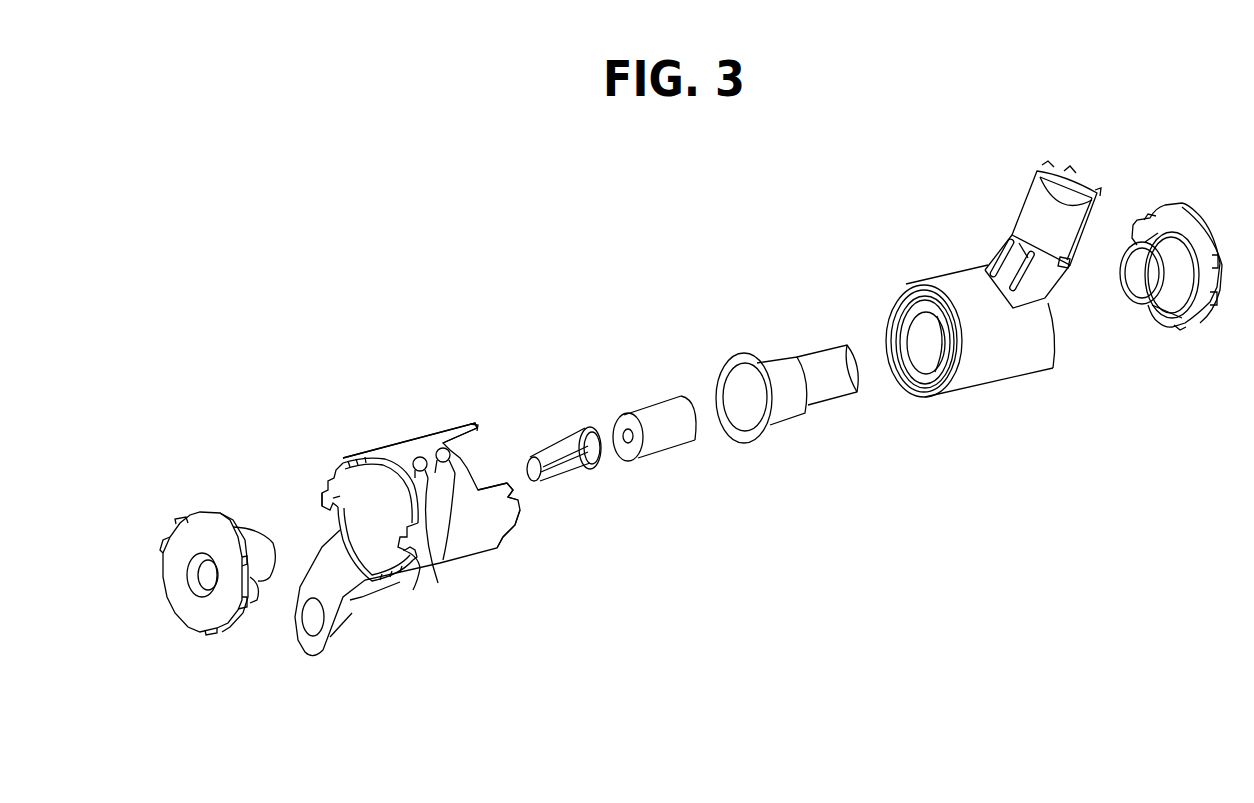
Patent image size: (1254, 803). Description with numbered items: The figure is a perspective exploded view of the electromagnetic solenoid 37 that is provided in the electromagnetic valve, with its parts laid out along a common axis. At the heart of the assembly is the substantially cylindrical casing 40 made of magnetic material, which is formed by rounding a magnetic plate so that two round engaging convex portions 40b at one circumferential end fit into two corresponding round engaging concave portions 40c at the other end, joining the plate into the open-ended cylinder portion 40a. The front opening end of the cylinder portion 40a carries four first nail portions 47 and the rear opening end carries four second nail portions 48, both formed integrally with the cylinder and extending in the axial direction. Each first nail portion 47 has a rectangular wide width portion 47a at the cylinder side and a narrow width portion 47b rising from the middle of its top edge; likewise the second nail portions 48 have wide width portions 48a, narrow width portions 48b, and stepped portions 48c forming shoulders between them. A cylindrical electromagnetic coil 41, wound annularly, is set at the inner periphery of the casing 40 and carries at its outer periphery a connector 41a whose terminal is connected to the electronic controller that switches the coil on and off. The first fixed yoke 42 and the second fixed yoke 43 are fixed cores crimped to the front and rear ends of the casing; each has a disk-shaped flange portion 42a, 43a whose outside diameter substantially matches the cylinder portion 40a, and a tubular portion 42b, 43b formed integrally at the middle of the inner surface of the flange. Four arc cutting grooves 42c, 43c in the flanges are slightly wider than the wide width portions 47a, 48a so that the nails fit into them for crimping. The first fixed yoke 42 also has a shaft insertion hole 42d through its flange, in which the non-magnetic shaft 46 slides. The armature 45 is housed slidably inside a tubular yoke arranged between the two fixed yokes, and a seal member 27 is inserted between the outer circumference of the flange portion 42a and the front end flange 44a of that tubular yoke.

The seal member 27 is at (923, 380).
The electromagnetic solenoid 37 is at (985, 305).
The casing 40 is at (408, 492).
The cylinder portion 40a is at (453, 540).
The round engaging convex portions 40b is at (413, 463).
The round engaging concave portions 40c is at (430, 493).
The electromagnetic coil 41 is at (993, 373).
The connector 41a is at (1027, 213).
The first fixed yoke 42 is at (193, 500).
The flange portion 42a is at (203, 625).
The tubular portion 42b is at (248, 540).
The arc cutting grooves 42c is at (163, 566).
The shaft insertion hole 42d is at (205, 588).
The second fixed yoke 43 is at (1179, 255).
The flange portion 43a is at (1190, 233).
The tubular portion 43b is at (1165, 303).
The arc cutting grooves 43c is at (1152, 217).
The front end flange 44a is at (740, 362).
The armature 45 is at (663, 443).
The shaft 46 is at (567, 467).
The first nail portions 47 is at (333, 477).
The wide width portions 47a is at (333, 500).
The narrow width portions 47b is at (320, 497).
The second nail portions 48 is at (474, 465).
The wide width portions 48a is at (487, 483).
The narrow width portions 48b is at (517, 507).
The stepped portions 48c is at (525, 460).